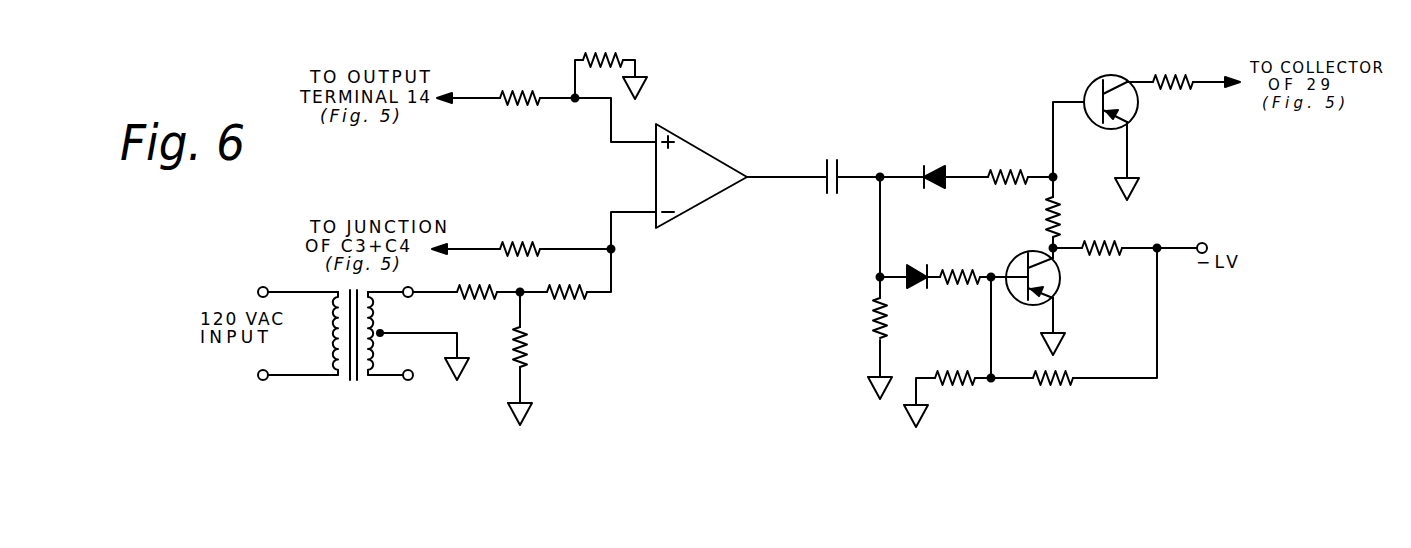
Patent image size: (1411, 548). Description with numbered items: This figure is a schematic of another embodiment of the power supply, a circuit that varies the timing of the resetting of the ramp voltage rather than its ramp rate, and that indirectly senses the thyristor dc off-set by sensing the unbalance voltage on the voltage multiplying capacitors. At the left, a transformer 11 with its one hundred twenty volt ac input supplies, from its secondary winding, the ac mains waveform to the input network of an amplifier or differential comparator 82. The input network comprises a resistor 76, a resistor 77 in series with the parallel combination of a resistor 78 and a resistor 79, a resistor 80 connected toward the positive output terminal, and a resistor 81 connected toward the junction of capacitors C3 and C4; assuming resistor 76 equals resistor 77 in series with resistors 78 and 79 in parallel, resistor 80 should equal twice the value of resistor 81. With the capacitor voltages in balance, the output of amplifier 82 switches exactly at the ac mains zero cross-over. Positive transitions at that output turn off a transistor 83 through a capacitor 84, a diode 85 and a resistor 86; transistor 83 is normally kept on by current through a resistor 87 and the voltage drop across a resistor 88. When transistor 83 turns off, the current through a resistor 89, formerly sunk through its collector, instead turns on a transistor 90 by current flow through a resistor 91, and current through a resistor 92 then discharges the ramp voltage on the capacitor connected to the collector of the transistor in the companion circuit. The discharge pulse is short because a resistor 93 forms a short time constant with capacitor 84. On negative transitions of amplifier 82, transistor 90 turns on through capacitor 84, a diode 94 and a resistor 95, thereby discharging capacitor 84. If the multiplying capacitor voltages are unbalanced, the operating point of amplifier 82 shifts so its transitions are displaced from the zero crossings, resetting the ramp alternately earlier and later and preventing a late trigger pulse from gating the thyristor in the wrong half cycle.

The transformer 11 is at (350, 381).
The resistor 76 is at (614, 42).
The resistor 77 is at (570, 302).
The resistor 78 is at (469, 301).
The resistor 79 is at (524, 346).
The resistor 80 is at (518, 106).
The resistor 81 is at (517, 244).
The amplifier or differential comparator 82 is at (704, 151).
The transistor 83 is at (1027, 235).
The capacitor 84 is at (836, 138).
The diode 85 is at (913, 265).
The resistor 86 is at (973, 256).
The resistor 87 is at (1041, 382).
The resistor 88 is at (963, 354).
The resistor 89 is at (1096, 254).
The transistor 90 is at (1096, 66).
The resistor 91 is at (1059, 216).
The resistor 92 is at (1176, 55).
The resistor 93 is at (875, 320).
The diode 94 is at (946, 146).
The resistor 95 is at (1018, 150).